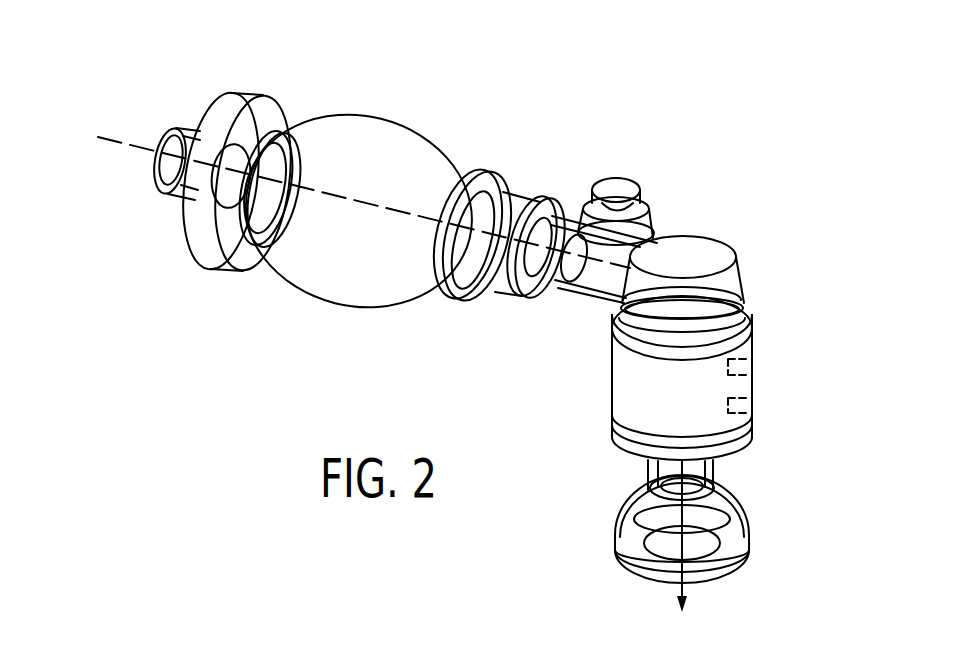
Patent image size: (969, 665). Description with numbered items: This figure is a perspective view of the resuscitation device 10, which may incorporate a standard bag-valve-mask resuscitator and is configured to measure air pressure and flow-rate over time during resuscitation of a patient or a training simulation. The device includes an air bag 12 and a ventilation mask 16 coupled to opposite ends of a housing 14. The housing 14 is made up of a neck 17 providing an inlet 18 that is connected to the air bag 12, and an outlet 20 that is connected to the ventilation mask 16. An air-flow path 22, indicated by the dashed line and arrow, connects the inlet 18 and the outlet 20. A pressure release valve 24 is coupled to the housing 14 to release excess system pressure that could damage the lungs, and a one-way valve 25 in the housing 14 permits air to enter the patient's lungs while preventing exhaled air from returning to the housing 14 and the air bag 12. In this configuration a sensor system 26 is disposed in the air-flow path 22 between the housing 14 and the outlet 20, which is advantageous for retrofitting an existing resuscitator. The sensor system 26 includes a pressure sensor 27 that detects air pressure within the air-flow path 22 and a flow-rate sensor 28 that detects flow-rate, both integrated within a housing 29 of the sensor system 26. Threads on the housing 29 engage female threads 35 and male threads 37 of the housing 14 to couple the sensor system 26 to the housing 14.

The resuscitation device 10 is at (474, 86).
The air bag 12 is at (339, 304).
The housing 14 is at (742, 280).
The ventilation mask 16 is at (618, 512).
The neck 17 is at (577, 290).
The inlet 18 is at (546, 203).
The outlet 20 is at (713, 470).
The air-flow path 22 is at (123, 147).
The pressure release valve 24 is at (652, 223).
The one-way valve 25 is at (643, 447).
The sensor system 26 is at (610, 383).
The pressure sensor 27 is at (750, 363).
The flow-rate sensor 28 is at (750, 403).
The housing 29 is at (630, 378).
The female threads 35 is at (752, 312).
The male threads 37 is at (617, 420).